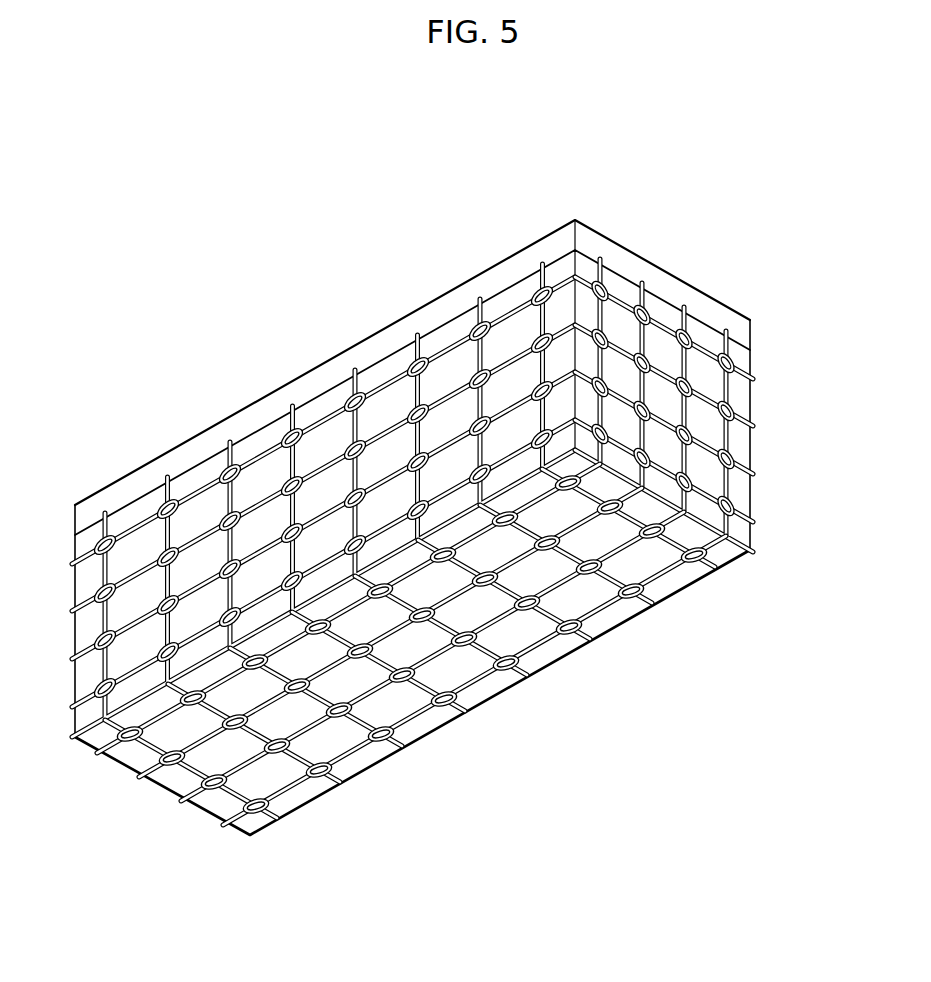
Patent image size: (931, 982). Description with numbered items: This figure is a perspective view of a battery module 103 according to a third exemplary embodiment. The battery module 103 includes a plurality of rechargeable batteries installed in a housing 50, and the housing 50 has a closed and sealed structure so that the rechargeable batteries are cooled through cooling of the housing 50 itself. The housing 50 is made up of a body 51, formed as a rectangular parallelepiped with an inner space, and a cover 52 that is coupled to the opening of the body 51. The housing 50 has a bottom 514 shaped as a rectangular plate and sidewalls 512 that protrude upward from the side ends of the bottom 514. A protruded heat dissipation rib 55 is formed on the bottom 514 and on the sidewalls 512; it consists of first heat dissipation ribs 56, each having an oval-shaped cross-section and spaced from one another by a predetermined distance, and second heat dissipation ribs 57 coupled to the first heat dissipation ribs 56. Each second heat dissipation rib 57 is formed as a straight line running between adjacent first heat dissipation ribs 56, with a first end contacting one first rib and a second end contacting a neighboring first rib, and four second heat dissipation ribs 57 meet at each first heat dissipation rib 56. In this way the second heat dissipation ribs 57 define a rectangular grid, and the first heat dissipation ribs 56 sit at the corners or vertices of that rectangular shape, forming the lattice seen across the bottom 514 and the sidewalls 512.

The battery module 103 is at (317, 321).
The housing 50 is at (659, 257).
The body 51 is at (760, 486).
The cover 52 is at (705, 302).
The sidewalls 512 is at (742, 398).
The bottom 514 is at (675, 581).
The heat dissipation rib 55 is at (248, 905).
The first heat dissipation ribs 56 is at (253, 811).
The second heat dissipation ribs 57 is at (273, 824).